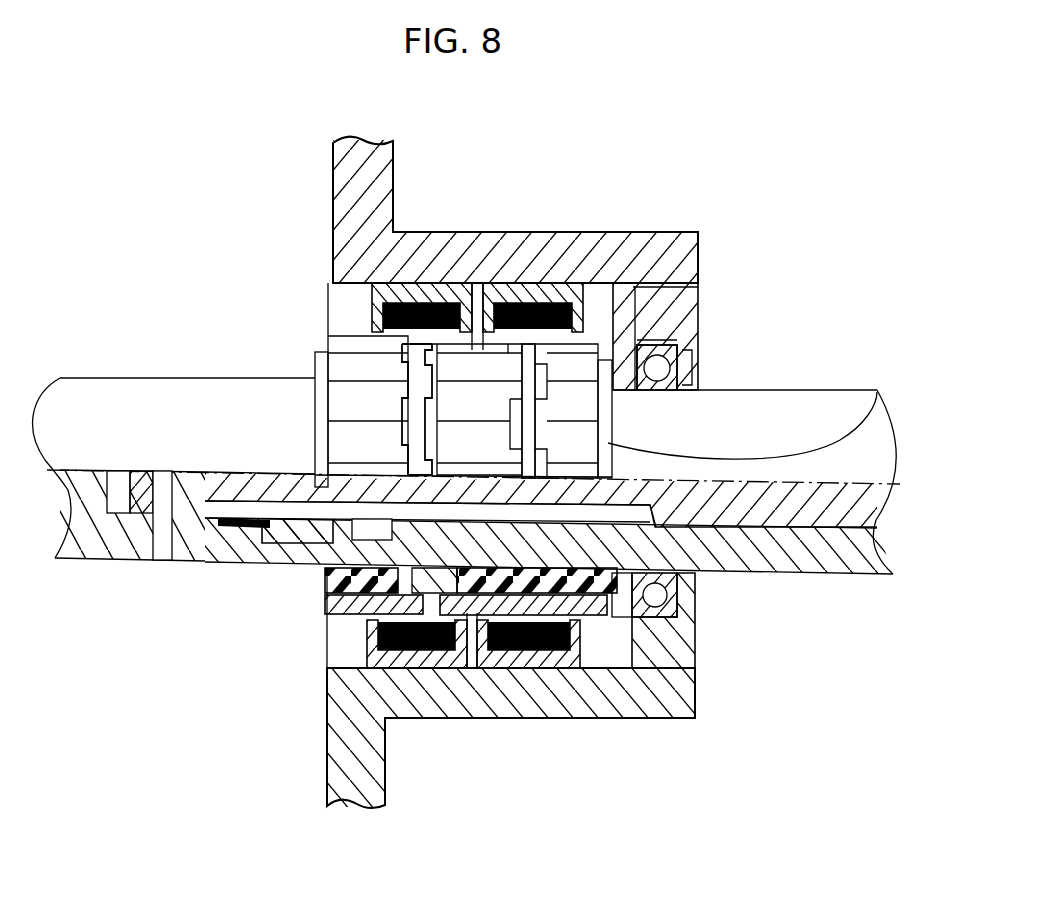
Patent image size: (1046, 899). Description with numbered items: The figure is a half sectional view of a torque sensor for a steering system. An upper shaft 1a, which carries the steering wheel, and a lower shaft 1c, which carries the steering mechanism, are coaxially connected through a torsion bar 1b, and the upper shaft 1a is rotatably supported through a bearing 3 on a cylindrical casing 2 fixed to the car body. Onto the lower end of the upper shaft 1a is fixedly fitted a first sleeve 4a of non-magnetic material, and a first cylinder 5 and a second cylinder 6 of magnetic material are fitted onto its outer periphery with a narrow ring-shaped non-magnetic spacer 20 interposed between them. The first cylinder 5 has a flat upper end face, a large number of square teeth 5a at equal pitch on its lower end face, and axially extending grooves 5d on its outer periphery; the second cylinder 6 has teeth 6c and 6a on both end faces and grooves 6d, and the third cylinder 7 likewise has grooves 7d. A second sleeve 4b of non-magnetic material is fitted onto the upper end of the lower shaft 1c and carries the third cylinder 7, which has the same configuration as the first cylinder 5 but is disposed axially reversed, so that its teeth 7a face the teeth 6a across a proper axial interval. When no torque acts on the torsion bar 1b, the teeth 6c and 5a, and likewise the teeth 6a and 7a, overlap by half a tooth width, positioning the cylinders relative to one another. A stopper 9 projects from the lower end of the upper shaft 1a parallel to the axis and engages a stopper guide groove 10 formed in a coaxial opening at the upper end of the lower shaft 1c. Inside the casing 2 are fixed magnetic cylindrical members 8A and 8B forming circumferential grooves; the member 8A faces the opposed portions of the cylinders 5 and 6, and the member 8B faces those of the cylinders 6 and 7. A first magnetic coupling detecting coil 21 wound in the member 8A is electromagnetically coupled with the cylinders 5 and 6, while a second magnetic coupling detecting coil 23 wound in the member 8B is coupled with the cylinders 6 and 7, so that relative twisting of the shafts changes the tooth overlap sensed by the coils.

The upper shaft 1a is at (777, 400).
The torsion bar 1b is at (650, 510).
The lower shaft 1c is at (92, 388).
The cylindrical casing 2 is at (467, 250).
The bearing 3 is at (672, 380).
The first sleeve 4a is at (877, 394).
The second sleeve 4b is at (312, 575).
The first cylinder 5 is at (625, 340).
The teeth 5a is at (658, 338).
The grooves 5d is at (684, 372).
The second cylinder 6 is at (352, 614).
The teeth 6a is at (395, 375).
The teeth 6c is at (518, 375).
The grooves 6d is at (690, 580).
The third cylinder 7 is at (357, 393).
The teeth 7a is at (382, 378).
The grooves 7d is at (306, 383).
The cylindrical member 8A is at (548, 300).
The cylindrical member 8B is at (433, 300).
The stopper 9 is at (262, 535).
The stopper guide groove 10 is at (283, 472).
The spacer 20 is at (542, 429).
The first magnetic coupling detecting coil 21 is at (556, 378).
The second magnetic coupling detecting coil 23 is at (443, 297).